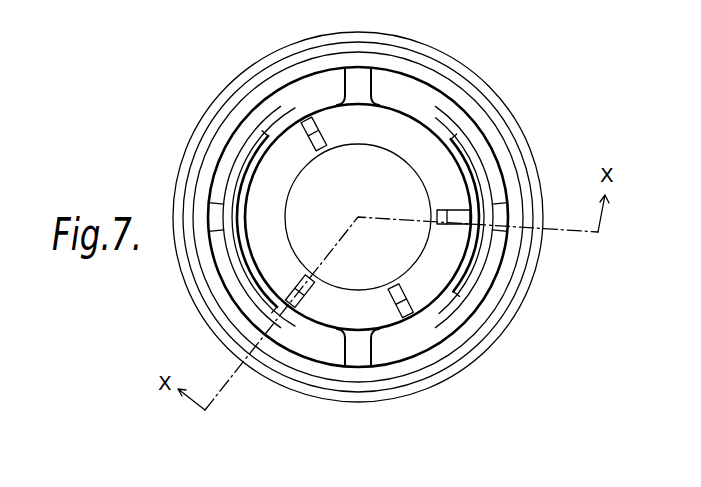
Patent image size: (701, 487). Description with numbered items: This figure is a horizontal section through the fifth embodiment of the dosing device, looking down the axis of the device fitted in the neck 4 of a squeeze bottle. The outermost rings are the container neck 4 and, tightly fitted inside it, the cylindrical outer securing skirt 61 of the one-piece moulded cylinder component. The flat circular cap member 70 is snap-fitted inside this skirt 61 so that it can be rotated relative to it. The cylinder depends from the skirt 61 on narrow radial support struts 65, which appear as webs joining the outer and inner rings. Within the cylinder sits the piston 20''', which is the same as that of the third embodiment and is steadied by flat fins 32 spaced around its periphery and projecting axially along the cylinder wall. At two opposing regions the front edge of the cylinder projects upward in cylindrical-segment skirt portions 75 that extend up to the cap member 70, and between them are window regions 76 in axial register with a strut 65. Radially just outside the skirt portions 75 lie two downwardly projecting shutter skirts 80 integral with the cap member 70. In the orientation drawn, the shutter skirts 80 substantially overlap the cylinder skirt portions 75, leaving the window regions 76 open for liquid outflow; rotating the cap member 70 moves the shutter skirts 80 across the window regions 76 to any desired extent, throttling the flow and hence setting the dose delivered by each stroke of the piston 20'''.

The neck 4 is at (537, 163).
The outer securing skirt 61 is at (485, 112).
The cap member 70 is at (447, 96).
The radial support struts 65 is at (360, 73).
The piston 20''' is at (412, 258).
The fins 32 is at (447, 228).
The shutter skirts 80 is at (478, 160).
The cylindrical-segment skirt portions 75 is at (250, 176).
The window regions 76 is at (297, 117).